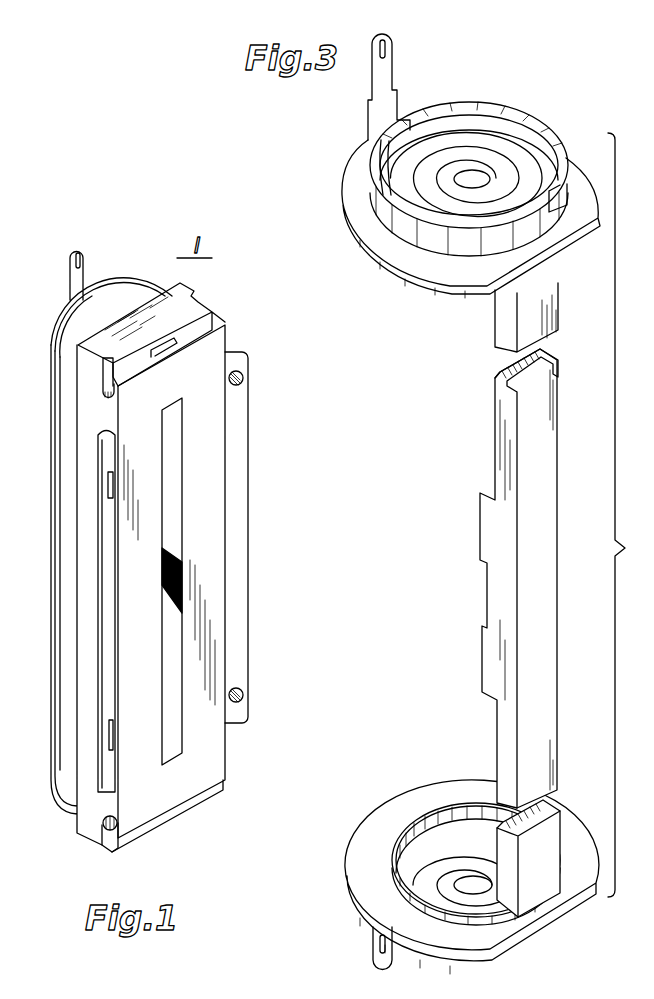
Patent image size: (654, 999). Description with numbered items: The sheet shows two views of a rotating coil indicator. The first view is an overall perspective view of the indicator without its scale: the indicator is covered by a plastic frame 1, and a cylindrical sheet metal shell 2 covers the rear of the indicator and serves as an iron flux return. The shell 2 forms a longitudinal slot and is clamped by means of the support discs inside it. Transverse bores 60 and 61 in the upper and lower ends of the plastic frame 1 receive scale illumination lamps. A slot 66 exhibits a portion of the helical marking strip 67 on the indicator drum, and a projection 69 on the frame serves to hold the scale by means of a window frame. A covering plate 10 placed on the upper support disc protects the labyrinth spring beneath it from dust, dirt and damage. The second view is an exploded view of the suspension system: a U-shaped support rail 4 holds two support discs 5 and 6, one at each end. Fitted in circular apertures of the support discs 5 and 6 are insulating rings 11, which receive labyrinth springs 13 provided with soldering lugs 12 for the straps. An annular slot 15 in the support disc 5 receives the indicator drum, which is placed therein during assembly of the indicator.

In FIG. 1, the plastic frame 1 is at (205, 427).
In FIG. 1, the cylindrical sheet metal shell 2 is at (65, 590).
In FIG. 1, the covering plate 10 is at (127, 292).
In FIG. 1, the transverse bore 60 is at (103, 397).
In FIG. 1, the transverse bore 61 is at (103, 820).
In FIG. 1, the slot 66 is at (172, 503).
In FIG. 1, the helical marking strip 67 is at (180, 590).
In FIG. 1, the projection 69 is at (213, 327).
In FIG. 3, the support rail 4 is at (542, 605).
In FIG. 3, the support disc 5 is at (563, 220).
In FIG. 3, the support disc 6 is at (570, 830).
In FIG. 3, the insulating ring 11 is at (547, 123).
In FIG. 3, the soldering lug 12 is at (383, 65).
In FIG. 3, the labyrinth spring 13 is at (477, 128).
In FIG. 3, the annular slot 15 is at (445, 267).